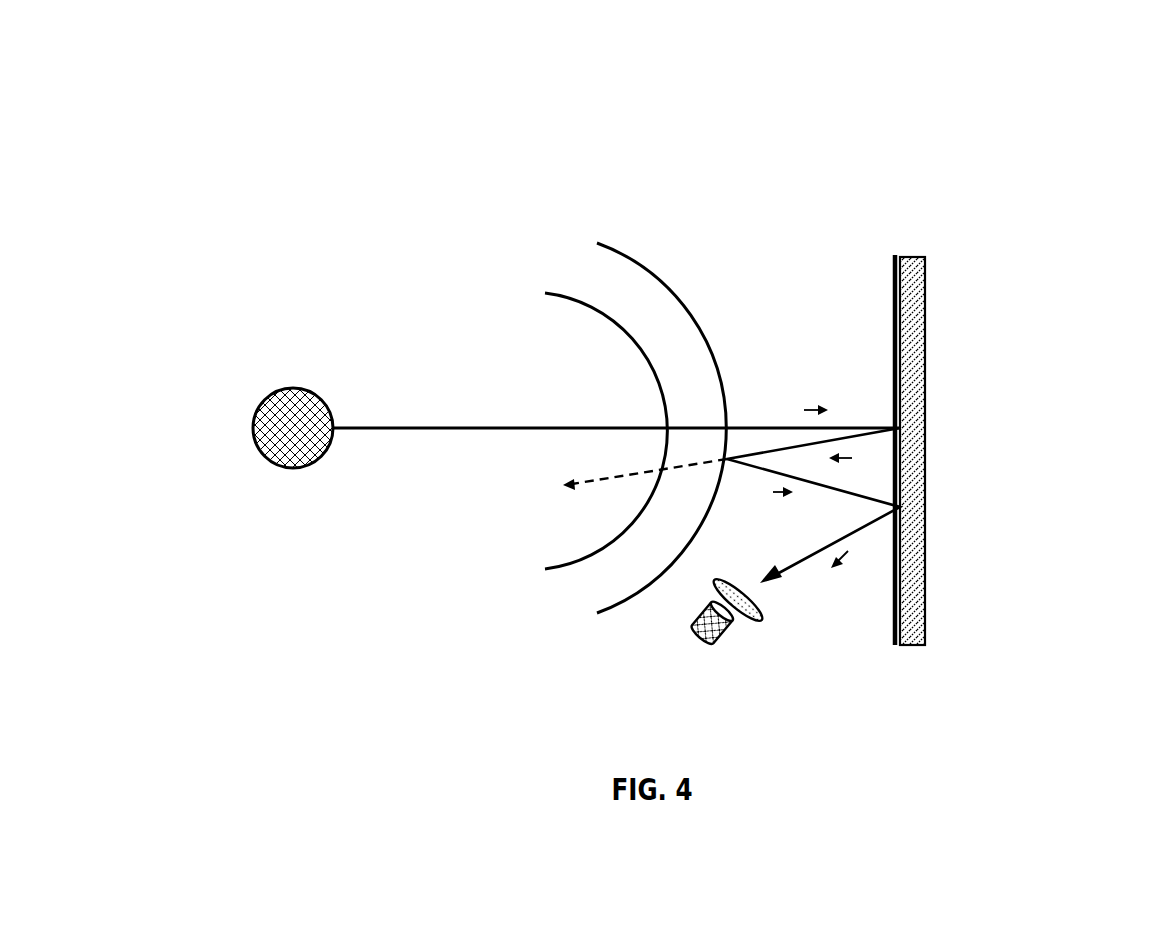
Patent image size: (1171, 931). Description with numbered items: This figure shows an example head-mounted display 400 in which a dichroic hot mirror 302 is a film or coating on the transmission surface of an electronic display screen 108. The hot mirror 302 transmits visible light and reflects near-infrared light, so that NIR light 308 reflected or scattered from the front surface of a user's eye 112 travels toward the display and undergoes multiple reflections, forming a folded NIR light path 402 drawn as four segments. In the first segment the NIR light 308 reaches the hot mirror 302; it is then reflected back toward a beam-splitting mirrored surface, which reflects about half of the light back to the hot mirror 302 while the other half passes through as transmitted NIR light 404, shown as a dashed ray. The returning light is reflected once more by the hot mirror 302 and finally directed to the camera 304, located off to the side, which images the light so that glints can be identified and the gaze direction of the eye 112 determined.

The head-mounted display 400 is at (130, 41).
The eye 112 is at (291, 388).
The NIR light 308 is at (448, 427).
The folded NIR light path 402 is at (775, 346).
The transmitted NIR light 404 is at (586, 490).
The hot mirror 302 is at (893, 255).
The electronic display screen 108 is at (926, 452).
The camera 304 is at (707, 643).